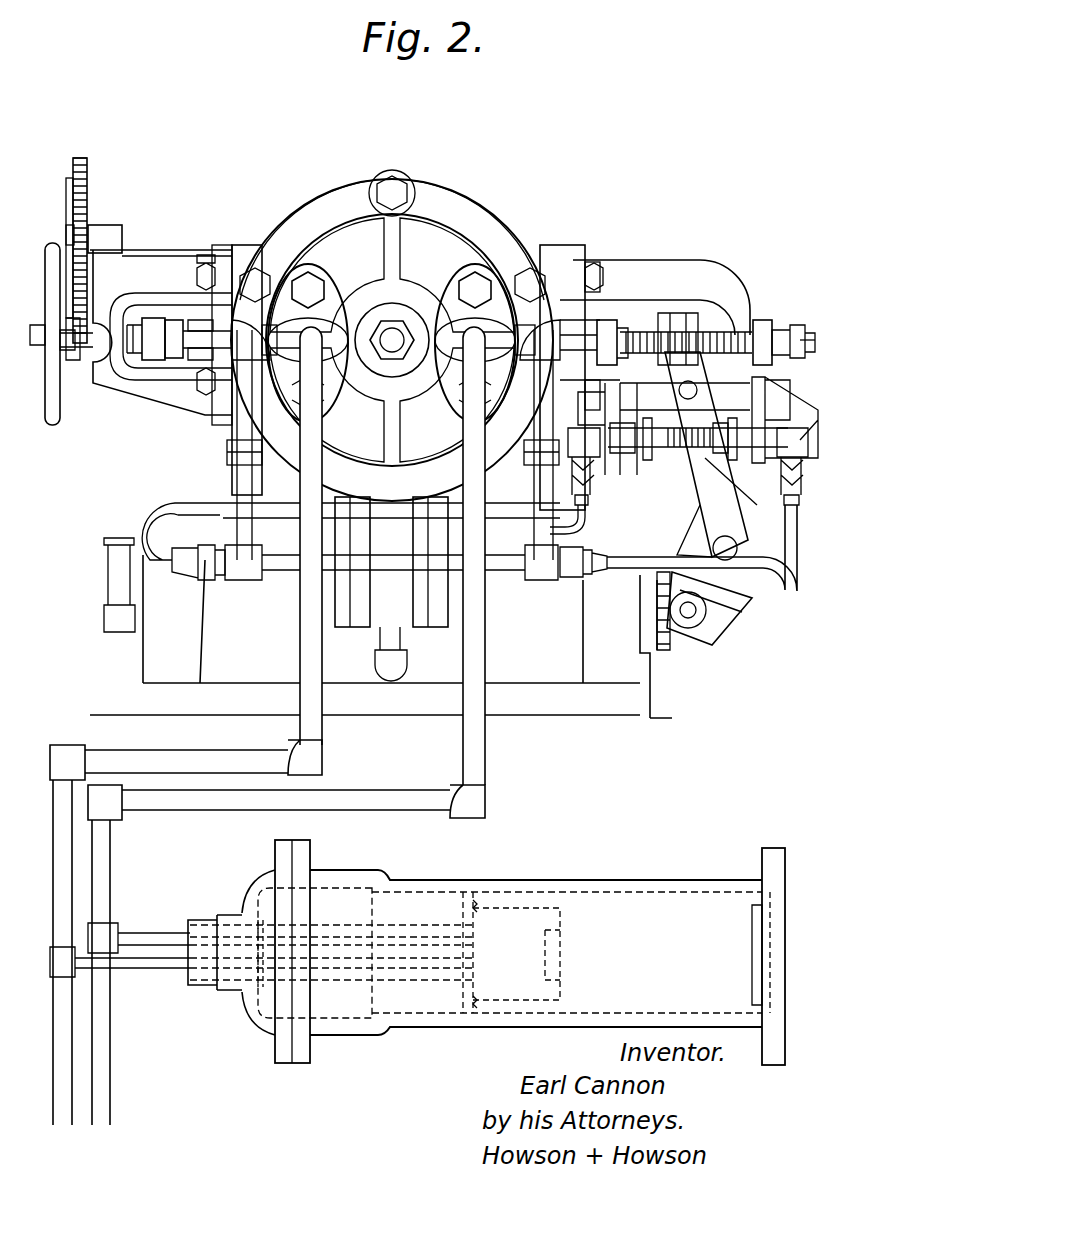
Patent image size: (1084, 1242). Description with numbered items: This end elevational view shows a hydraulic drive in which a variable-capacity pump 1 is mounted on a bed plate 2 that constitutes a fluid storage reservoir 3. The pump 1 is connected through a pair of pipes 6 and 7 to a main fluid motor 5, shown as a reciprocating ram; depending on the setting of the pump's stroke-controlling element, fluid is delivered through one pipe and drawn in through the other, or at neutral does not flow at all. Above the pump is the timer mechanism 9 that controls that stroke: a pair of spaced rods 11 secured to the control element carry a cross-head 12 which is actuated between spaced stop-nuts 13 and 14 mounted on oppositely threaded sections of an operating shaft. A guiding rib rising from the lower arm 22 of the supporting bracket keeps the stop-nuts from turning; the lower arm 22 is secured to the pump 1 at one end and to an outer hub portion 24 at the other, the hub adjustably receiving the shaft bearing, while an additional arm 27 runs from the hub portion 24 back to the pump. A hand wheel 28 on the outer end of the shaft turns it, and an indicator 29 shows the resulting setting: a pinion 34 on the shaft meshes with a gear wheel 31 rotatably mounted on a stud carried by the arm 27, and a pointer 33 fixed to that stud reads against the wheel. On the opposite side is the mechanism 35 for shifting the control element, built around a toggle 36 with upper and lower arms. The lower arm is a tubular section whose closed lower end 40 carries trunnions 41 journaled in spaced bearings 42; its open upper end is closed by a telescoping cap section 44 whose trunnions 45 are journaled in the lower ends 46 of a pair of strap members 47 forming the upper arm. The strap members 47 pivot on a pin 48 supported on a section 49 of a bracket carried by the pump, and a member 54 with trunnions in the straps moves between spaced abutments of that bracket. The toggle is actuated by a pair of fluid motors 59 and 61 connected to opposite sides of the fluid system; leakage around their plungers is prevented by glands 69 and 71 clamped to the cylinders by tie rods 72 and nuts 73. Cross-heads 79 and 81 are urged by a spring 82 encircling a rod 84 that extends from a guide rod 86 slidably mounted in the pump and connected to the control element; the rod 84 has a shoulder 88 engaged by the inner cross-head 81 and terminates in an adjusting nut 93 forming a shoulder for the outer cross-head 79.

The variable-capacity pump 1 is at (450, 205).
The bed plate 2 is at (215, 515).
The fluid storage reservoir 3 is at (256, 660).
The main fluid motor 5 is at (478, 878).
The pipe 6 is at (306, 336).
The pipe 7 is at (470, 340).
The timer mechanism 9 is at (161, 242).
The spaced rods 11 is at (207, 325).
The cross-head 12 is at (175, 358).
The stop-nut 13 is at (152, 318).
The stop-nut 14 is at (200, 318).
The lower arm 22 is at (125, 400).
The outer hub portion 24 is at (107, 372).
The additional arm 27 is at (128, 248).
The hand wheel 28 is at (53, 422).
The indicator 29 is at (59, 212).
The gear wheel 31 is at (88, 170).
The pointer 33 is at (73, 170).
The pinion 34 is at (80, 352).
The mechanism 35 is at (690, 272).
The toggle 36 is at (700, 512).
The lower end 40 is at (735, 603).
The trunnions 41 is at (696, 612).
The spaced bearings 42 is at (680, 640).
The telescoping cap section 44 is at (745, 578).
The trunnions 45 is at (737, 546).
The lower ends 46 is at (727, 503).
The strap members 47 is at (695, 458).
The pin 48 is at (688, 399).
The section 49 is at (664, 429).
The member 54 is at (672, 313).
The fluid motor 59 is at (795, 420).
The fluid motor 61 is at (575, 480).
The gland 69 is at (735, 470).
The gland 71 is at (635, 462).
The tie rods 72 is at (677, 450).
The nuts 73 is at (652, 462).
The outer cross-head 79 is at (765, 320).
The inner cross-head 81 is at (608, 320).
The spring 82 is at (685, 340).
The rod 84 is at (810, 330).
The guide rod 86 is at (578, 342).
The shoulder 88 is at (612, 345).
The adjusting nut 93 is at (790, 335).